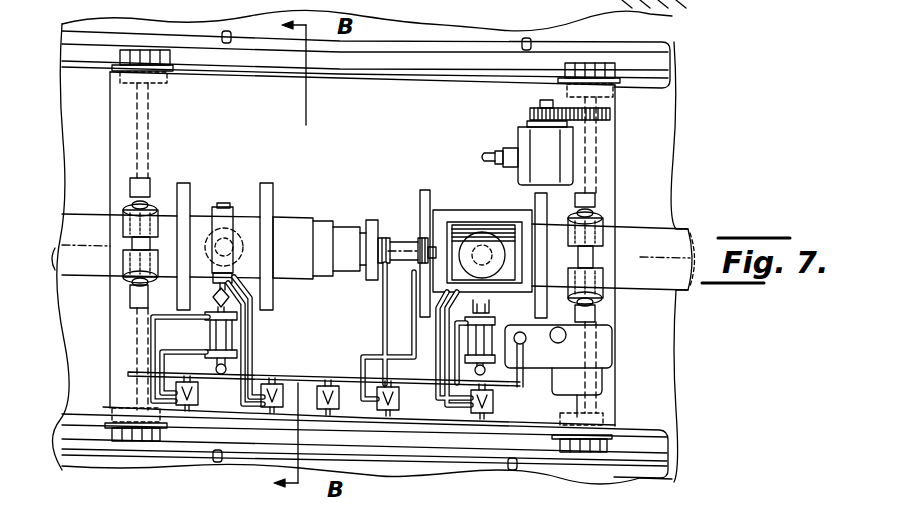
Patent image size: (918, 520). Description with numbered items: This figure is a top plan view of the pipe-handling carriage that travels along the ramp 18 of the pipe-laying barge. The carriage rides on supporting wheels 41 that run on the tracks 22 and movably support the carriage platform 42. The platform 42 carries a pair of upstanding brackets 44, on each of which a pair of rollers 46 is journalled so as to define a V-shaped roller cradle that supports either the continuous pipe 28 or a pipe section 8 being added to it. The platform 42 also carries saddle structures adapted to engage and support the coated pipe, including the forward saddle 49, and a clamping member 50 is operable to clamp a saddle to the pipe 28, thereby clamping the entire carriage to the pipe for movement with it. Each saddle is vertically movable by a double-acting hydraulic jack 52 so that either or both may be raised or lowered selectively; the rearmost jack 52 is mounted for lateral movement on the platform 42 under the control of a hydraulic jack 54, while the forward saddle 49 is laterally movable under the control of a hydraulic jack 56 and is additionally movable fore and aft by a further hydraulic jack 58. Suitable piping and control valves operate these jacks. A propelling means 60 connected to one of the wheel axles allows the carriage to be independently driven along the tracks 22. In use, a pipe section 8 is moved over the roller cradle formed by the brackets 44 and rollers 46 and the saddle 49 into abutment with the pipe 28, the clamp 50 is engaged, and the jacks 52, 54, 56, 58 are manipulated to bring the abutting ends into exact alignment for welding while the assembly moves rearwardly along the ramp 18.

The pipe section 8 is at (657, 228).
The ramp 18 is at (677, 195).
The tracks 22 is at (647, 72).
The continuous pipe 28 is at (292, 216).
The supporting wheels 41 is at (167, 72).
The carriage platform 42 is at (118, 151).
The upstanding brackets 44 is at (152, 184).
The rollers 46 is at (125, 210).
The forward saddle 49 is at (462, 236).
The clamping member 50 is at (238, 216).
The double-acting hydraulic jack 52 is at (217, 208).
The hydraulic jack 54 is at (210, 334).
The hydraulic jack 56 is at (492, 334).
The hydraulic jack 58 is at (398, 242).
The propelling means 60 is at (522, 140).